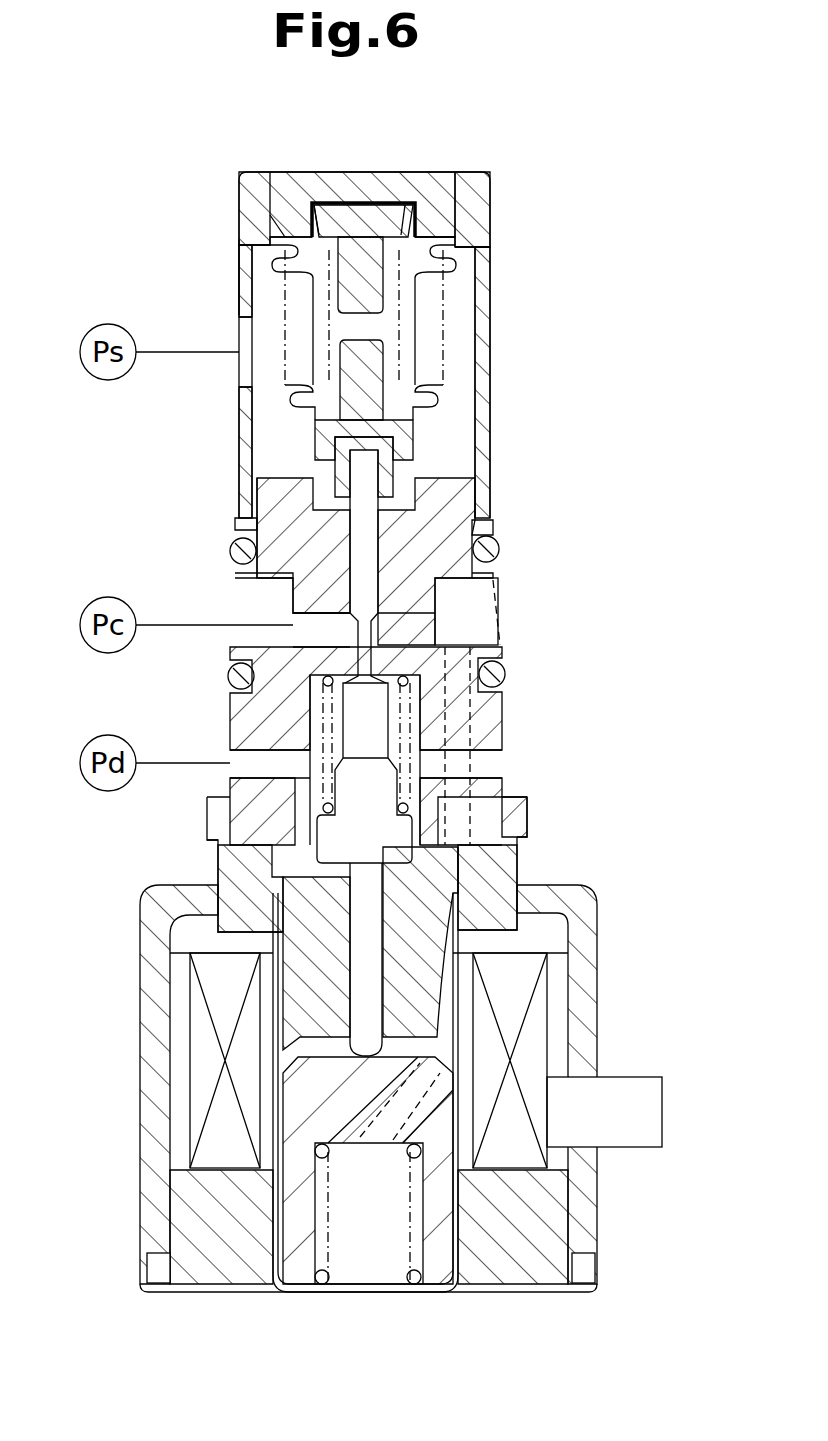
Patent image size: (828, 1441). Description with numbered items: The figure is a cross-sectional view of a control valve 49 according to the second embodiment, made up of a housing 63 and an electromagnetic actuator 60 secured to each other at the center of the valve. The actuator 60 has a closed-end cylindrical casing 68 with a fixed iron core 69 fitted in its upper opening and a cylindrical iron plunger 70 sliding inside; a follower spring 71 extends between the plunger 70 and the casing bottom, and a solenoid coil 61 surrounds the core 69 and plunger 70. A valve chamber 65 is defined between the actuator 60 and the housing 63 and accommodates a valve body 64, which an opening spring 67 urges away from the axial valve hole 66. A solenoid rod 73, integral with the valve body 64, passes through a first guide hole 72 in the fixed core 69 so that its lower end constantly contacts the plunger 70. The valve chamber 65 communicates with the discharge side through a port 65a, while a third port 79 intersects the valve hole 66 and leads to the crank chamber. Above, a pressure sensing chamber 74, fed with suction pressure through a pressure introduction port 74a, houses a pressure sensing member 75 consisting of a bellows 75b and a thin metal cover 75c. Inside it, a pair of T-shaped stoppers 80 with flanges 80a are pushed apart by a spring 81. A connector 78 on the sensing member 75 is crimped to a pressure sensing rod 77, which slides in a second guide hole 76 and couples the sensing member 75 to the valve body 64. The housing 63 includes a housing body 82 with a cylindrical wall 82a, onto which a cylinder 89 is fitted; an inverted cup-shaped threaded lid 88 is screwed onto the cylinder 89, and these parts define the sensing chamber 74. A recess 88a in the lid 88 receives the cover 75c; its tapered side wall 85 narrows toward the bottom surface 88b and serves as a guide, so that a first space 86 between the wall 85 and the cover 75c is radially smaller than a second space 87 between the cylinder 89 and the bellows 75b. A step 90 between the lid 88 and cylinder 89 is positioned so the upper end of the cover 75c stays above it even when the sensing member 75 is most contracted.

The control valve 49 is at (648, 264).
The electromagnetic actuator 60 is at (586, 920).
The solenoid coil 61 is at (540, 1042).
The housing 63 is at (232, 704).
The valve body 64 is at (392, 716).
The valve chamber 65 is at (312, 786).
The port 65a is at (232, 752).
The valve hole 66 is at (380, 626).
The opening spring 67 is at (410, 682).
The cylindrical casing 68 is at (363, 1284).
The fixed iron core 69 is at (292, 988).
The plunger 70 is at (293, 1284).
The follower spring 71 is at (419, 1284).
The first guide hole 72 is at (354, 932).
The solenoid rod 73 is at (354, 986).
The pressure sensing chamber 74 is at (478, 432).
The pressure introduction port 74a is at (240, 380).
The pressure sensing member 75 is at (455, 388).
The bellows 75b is at (470, 247).
The thin metal cover 75c is at (470, 205).
The second guide hole 76 is at (380, 545).
The pressure sensing rod 77 is at (324, 580).
The connector 78 is at (340, 468).
The third port 79 is at (296, 618).
The stopper 80 is at (382, 296).
The flange 80a is at (326, 212).
The spring 81 is at (286, 256).
The housing body 82 is at (495, 549).
The cylindrical wall 82a is at (480, 502).
The side wall 85 is at (425, 205).
The first space 86 is at (300, 216).
The second space 87 is at (300, 243).
The threaded lid 88 is at (296, 204).
The recess 88a is at (403, 205).
The bottom surface 88b is at (345, 205).
The cylinder 89 is at (238, 295).
The step 90 is at (475, 224).